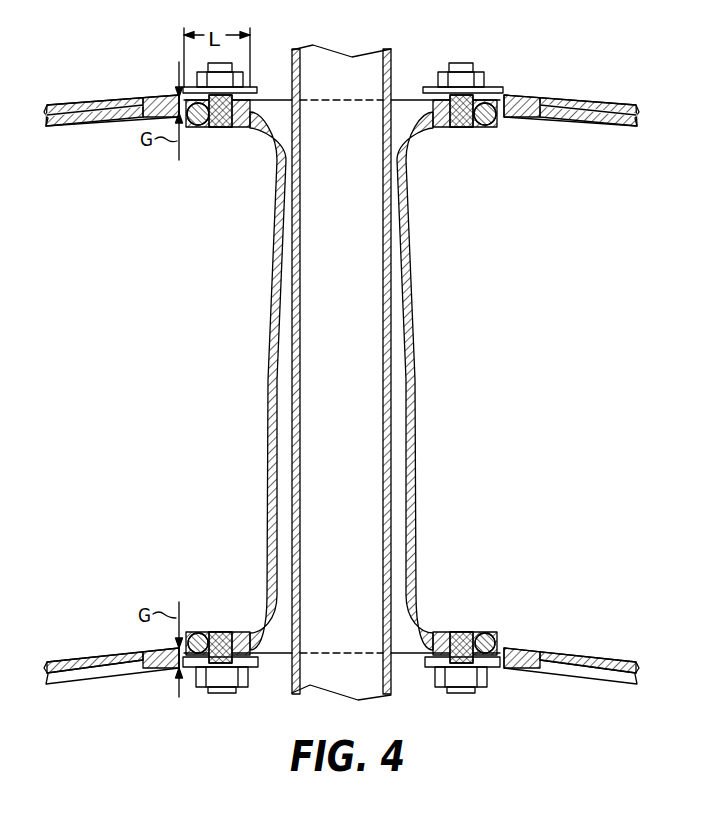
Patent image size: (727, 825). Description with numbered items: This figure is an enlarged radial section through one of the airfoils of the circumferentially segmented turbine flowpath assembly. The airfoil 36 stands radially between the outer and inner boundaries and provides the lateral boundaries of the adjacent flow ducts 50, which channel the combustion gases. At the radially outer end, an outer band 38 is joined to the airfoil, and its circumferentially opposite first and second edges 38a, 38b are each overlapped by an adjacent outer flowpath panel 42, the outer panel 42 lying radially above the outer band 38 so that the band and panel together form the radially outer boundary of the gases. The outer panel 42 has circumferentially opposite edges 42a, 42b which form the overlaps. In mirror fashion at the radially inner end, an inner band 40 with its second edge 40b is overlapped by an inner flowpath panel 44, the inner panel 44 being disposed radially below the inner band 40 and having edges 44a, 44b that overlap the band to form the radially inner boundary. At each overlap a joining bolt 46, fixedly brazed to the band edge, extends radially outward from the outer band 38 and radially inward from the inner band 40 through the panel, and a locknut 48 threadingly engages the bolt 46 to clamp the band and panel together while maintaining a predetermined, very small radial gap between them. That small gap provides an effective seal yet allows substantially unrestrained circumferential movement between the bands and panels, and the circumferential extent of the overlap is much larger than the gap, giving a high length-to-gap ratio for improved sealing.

The airfoil 36 is at (415, 460).
The outer band 38 is at (250, 140).
The first edge of outer band 38a is at (188, 128).
The second edge of outer band 38b is at (495, 126).
The inner band 40 is at (252, 625).
The second edge of inner band 40b is at (495, 634).
The outer flowpath panel 42 is at (97, 124).
The first edge of outer panel 42a is at (506, 92).
The second edge of outer panel 42b is at (178, 88).
The inner flowpath panel 44 is at (108, 648).
The first edge of inner panel 44a is at (507, 670).
The second edge of inner panel 44b is at (178, 672).
The joining bolt 46 is at (457, 129).
The locknut 48 is at (484, 74).
The flow duct 50 is at (162, 413).